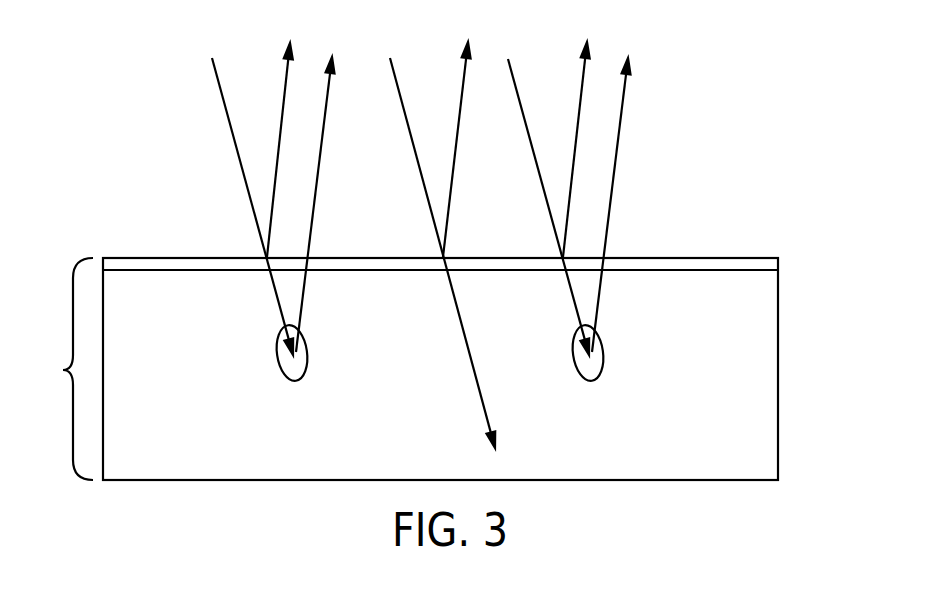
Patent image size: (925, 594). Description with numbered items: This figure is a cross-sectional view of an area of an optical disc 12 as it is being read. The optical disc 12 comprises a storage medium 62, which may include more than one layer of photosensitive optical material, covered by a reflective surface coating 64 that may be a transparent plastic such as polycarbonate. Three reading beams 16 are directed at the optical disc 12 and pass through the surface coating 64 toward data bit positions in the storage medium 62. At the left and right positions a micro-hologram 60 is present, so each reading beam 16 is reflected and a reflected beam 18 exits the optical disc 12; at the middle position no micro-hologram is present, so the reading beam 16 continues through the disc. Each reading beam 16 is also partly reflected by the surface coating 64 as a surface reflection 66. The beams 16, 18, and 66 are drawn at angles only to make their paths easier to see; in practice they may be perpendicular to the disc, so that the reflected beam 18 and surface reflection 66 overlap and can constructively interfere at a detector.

The optical disc 12 is at (62, 370).
The reading beam 16 is at (250, 198).
The reflected beam 18 is at (315, 210).
The micro-hologram 60 is at (285, 372).
The storage medium 62 is at (778, 372).
The reflective surface coating 64 is at (778, 262).
The surface reflection 66 is at (277, 155).